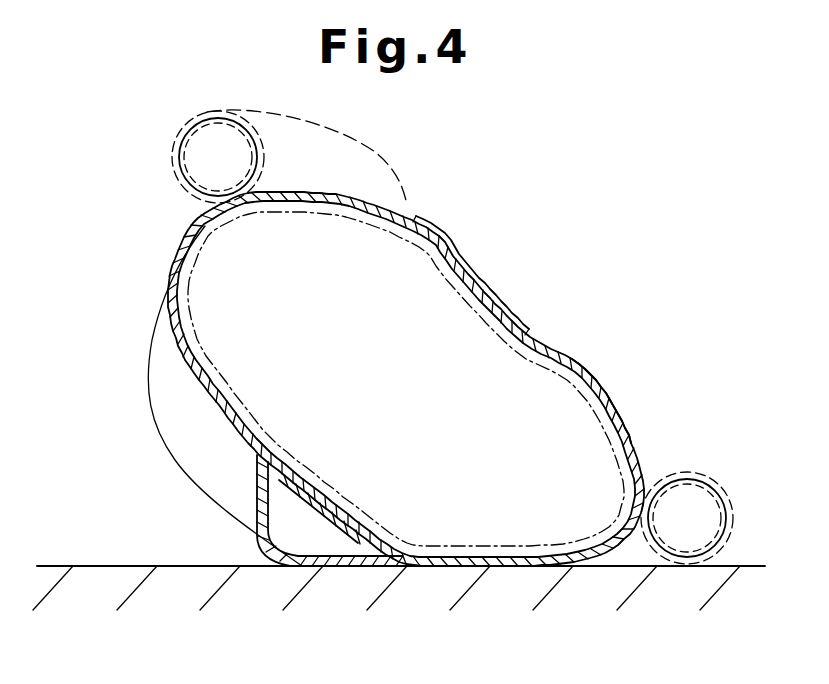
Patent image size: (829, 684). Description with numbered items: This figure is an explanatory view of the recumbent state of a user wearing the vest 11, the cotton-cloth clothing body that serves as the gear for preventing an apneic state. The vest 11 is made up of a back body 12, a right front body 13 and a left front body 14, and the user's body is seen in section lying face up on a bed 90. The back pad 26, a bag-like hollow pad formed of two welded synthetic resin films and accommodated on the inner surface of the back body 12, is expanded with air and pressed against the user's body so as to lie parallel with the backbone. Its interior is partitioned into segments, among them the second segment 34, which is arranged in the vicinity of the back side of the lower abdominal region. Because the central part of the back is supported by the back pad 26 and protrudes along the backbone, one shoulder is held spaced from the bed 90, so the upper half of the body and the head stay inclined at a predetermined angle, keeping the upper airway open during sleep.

The vest 11 is at (523, 284).
The back body 12 is at (208, 397).
The right front body 13 is at (607, 387).
The left front body 14 is at (436, 222).
The back pad 26 is at (328, 568).
The second segment 34 is at (266, 540).
The bed 90 is at (54, 567).